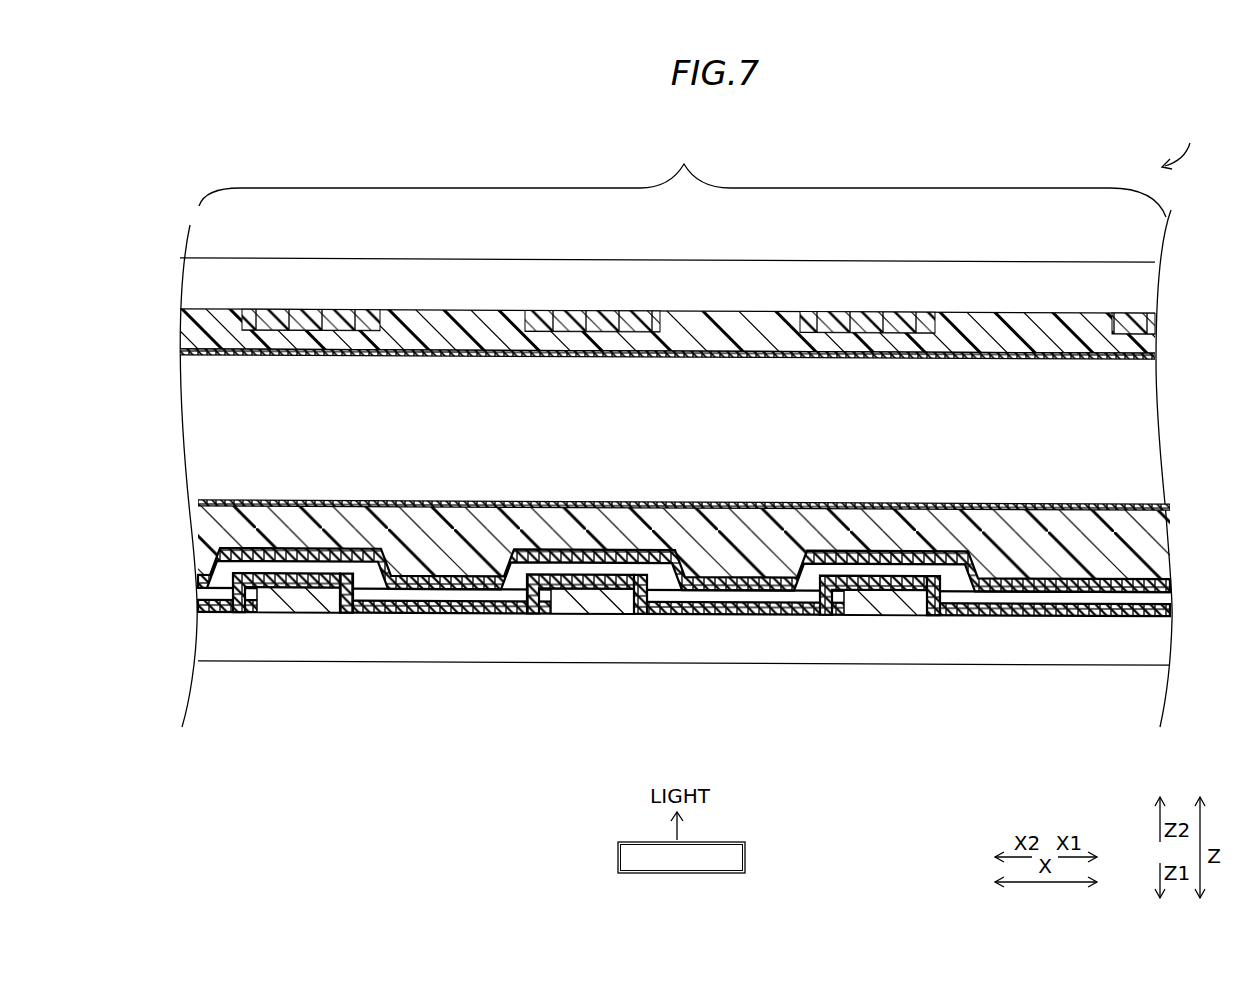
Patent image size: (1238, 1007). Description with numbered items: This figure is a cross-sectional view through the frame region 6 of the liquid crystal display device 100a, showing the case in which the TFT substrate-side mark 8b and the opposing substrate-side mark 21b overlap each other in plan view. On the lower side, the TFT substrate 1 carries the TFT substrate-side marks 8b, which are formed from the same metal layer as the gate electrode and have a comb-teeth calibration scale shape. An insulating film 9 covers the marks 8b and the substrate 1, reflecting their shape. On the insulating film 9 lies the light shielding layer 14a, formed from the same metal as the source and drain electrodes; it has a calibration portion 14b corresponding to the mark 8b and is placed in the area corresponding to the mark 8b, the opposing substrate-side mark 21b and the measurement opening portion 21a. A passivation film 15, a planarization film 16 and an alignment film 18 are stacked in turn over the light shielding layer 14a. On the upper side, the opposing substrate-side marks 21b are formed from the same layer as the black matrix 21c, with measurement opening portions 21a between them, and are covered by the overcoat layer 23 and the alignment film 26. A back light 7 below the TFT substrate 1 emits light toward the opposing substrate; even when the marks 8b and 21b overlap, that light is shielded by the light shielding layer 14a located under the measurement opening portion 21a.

The frame region 6 is at (682, 174).
The liquid crystal display device 100a is at (1190, 141).
The measurement opening portion 21a is at (477, 322).
The opposing substrate-side mark 21b is at (349, 322).
The black matrix 21c is at (1130, 322).
The overcoat layer 23 is at (800, 346).
The alignment film 26 is at (837, 357).
The alignment film 18 is at (815, 500).
The planarization film 16 is at (977, 567).
The passivation film 15 is at (1000, 585).
The insulating film 9 is at (406, 604).
The TFT substrate-side mark 8b is at (295, 600).
The calibration portion 14b is at (237, 605).
The light shielding layer 14a is at (1040, 598).
The TFT substrate 1 is at (1099, 642).
The back light 7 is at (745, 852).